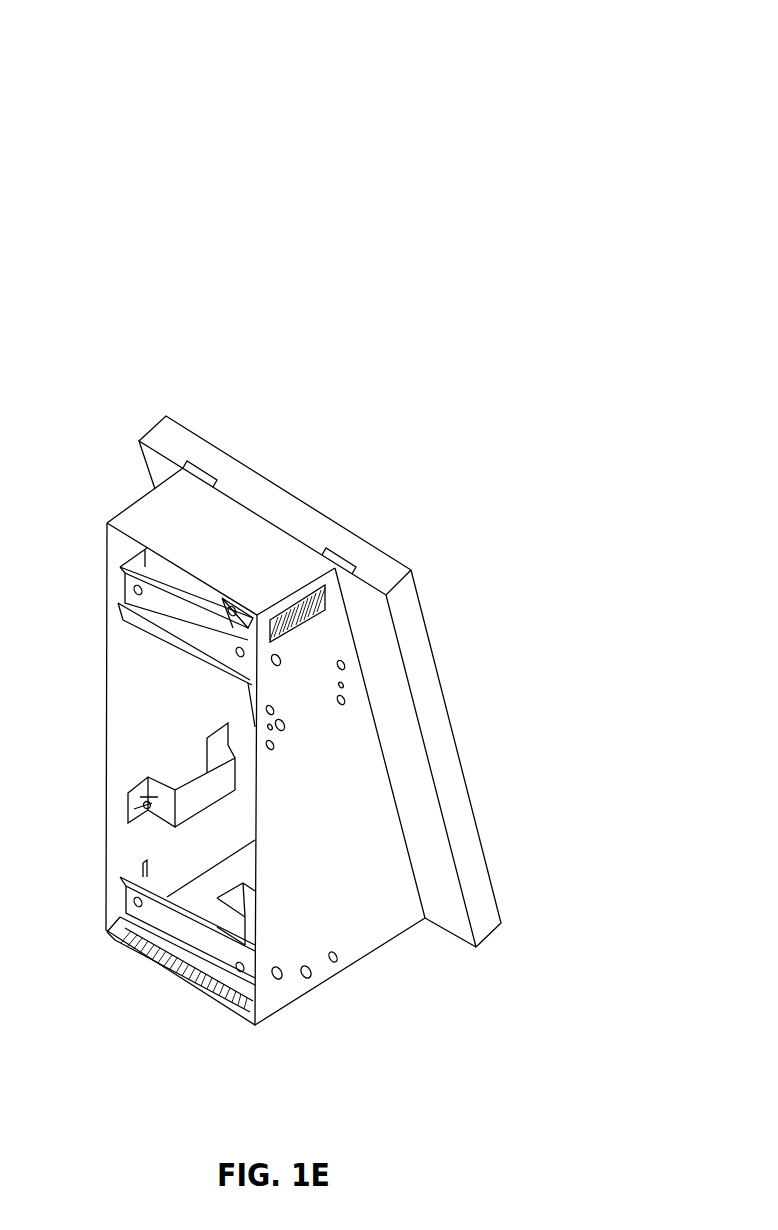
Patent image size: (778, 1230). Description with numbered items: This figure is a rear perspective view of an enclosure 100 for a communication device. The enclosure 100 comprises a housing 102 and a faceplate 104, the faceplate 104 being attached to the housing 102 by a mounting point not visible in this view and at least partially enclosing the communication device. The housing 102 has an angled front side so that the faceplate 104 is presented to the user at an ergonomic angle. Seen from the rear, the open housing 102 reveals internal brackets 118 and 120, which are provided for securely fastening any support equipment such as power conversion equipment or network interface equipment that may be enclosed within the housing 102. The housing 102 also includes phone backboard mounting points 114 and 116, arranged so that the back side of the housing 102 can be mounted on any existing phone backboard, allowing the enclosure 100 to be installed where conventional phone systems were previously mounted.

The enclosure 100 is at (688, 48).
The housing 102 is at (172, 515).
The faceplate 104 is at (278, 506).
The phone backboard mounting point 114 is at (167, 612).
The phone backboard mounting point 116 is at (168, 906).
The internal bracket 118 is at (142, 798).
The internal bracket 120 is at (233, 922).